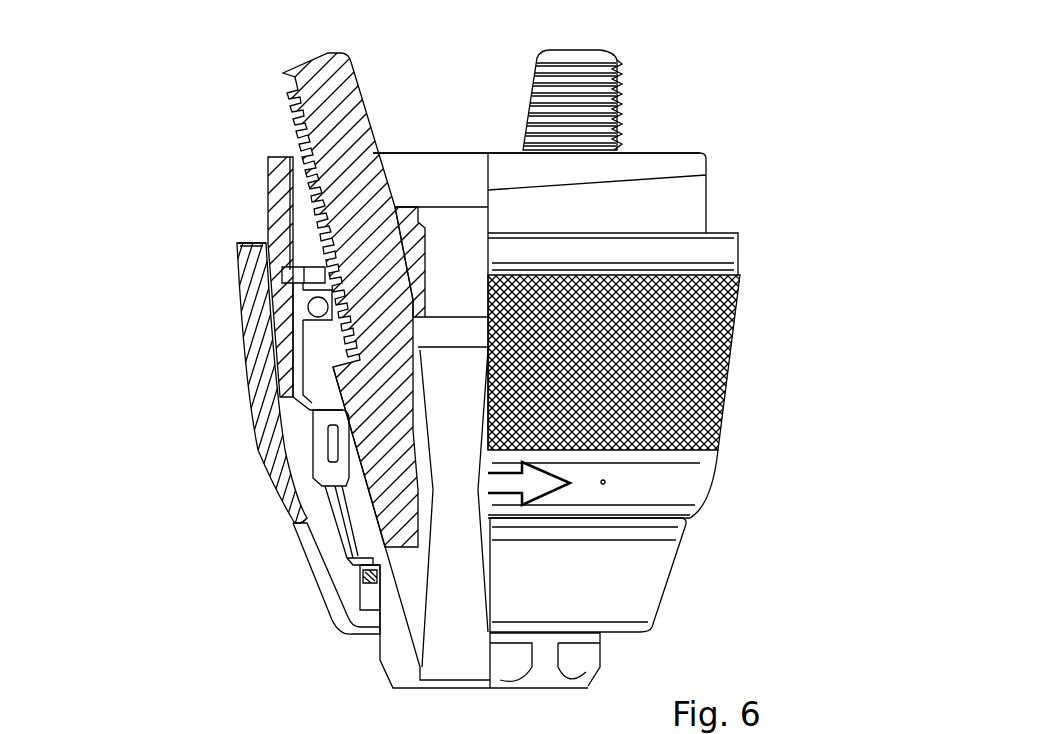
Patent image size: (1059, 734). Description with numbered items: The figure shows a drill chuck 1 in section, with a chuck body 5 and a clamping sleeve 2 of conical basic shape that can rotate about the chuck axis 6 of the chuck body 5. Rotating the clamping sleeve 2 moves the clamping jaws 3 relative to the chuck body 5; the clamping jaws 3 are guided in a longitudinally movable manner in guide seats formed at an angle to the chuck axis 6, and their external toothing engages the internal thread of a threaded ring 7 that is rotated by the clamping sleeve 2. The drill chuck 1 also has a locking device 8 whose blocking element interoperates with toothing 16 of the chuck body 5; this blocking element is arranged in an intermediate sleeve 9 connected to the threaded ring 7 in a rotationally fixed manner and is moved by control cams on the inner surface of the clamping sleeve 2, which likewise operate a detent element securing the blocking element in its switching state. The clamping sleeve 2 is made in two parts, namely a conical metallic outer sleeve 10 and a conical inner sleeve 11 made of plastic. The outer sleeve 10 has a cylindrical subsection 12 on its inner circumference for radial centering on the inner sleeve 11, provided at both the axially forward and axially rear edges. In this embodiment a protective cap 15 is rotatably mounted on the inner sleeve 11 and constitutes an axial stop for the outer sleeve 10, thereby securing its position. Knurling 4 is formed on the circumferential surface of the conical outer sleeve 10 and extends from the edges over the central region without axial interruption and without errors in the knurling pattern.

The drill chuck 1 is at (235, 130).
The clamping sleeve 2 is at (262, 268).
The clamping jaws 3 is at (612, 100).
The knurling 4 is at (718, 343).
The chuck body 5 is at (375, 535).
The chuck axis 6 is at (706, 175).
The threaded ring 7 is at (327, 338).
The locking device 8 is at (232, 460).
The intermediate sleeve 9 is at (343, 412).
The outer sleeve 10 is at (248, 348).
The inner sleeve 11 is at (293, 450).
The cylindrical subsection 12 is at (258, 270).
The protective cap 15 is at (657, 578).
The toothing 16 is at (236, 578).